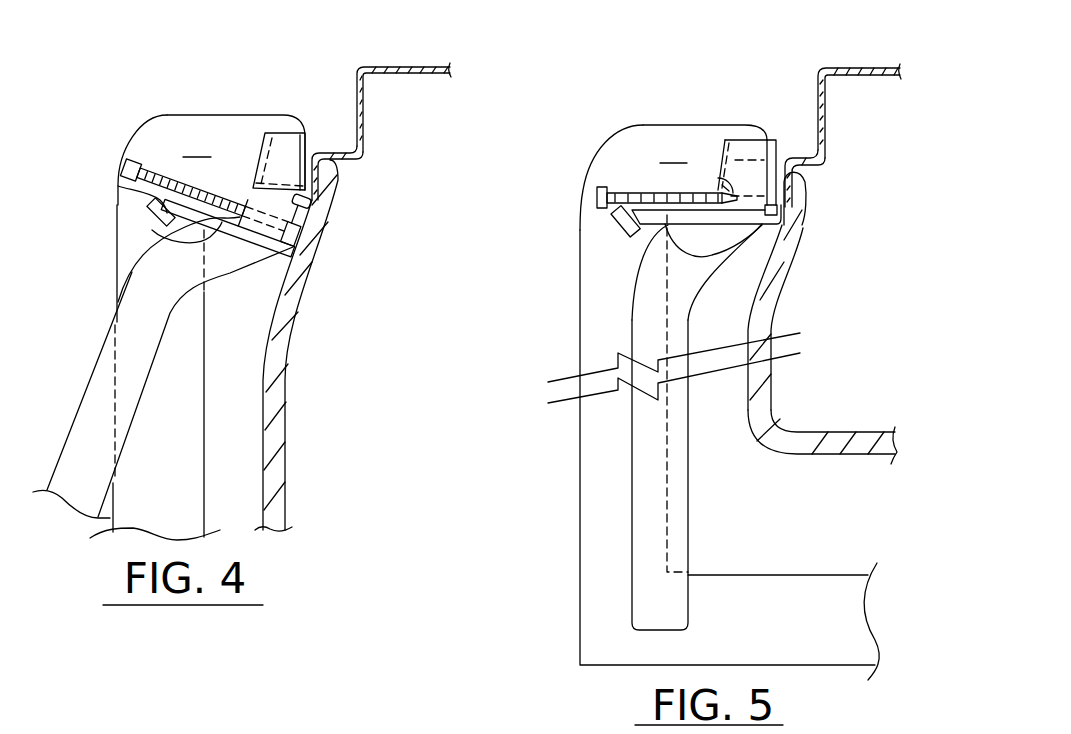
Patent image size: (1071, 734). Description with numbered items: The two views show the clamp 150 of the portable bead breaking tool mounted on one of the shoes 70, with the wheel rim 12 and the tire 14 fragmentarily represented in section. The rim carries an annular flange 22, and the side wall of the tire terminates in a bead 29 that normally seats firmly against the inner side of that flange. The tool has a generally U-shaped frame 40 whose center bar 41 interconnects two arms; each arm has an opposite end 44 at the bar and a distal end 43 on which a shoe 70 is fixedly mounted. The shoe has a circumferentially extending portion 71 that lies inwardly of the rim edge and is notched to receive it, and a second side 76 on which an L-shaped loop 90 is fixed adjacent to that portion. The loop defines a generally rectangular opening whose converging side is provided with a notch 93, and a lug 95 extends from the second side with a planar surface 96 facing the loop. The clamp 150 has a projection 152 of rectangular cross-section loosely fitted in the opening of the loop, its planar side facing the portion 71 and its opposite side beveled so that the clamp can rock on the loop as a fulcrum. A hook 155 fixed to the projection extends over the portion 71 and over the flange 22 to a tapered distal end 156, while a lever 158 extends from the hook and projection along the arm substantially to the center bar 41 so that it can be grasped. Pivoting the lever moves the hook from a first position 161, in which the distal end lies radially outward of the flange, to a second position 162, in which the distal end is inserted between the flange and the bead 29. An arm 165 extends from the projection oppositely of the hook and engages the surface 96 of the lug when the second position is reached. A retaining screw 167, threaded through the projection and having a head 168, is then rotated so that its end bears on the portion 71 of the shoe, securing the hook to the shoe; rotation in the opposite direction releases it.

In FIG. 4, the wheel rim 12 is at (386, 60).
In FIG. 5, the wheel rim 12 is at (861, 66).
In FIG. 4, the tire 14 is at (295, 496).
In FIG. 5, the tire 14 is at (787, 465).
In FIG. 4, the annular flange 22 is at (358, 143).
In FIG. 5, the annular flange 22 is at (786, 181).
In FIG. 5, the bead 29 is at (805, 185).
In FIG. 5, the frame 40 is at (560, 659).
In FIG. 5, the center bar 41 is at (843, 585).
In FIG. 5, the distal end 43 is at (592, 454).
In FIG. 5, the opposite end 44 is at (587, 562).
In FIG. 4, the shoe 70 is at (127, 141).
In FIG. 5, the shoe 70 is at (598, 137).
In FIG. 4, the circumferentially extending portion 71 is at (307, 143).
In FIG. 5, the circumferentially extending portion 71 is at (775, 163).
In FIG. 4, the second side 76 is at (197, 145).
In FIG. 5, the second side 76 is at (673, 152).
In FIG. 4, the L-shaped loop 90 is at (267, 133).
In FIG. 5, the L-shaped loop 90 is at (719, 185).
In FIG. 5, the notch 93 is at (715, 187).
In FIG. 4, the lug 95 is at (145, 208).
In FIG. 5, the lug 95 is at (620, 228).
In FIG. 4, the planar surface 96 is at (140, 190).
In FIG. 5, the planar surface 96 is at (620, 213).
In FIG. 4, the clamp 150 is at (229, 284).
In FIG. 5, the clamp 150 is at (712, 305).
In FIG. 4, the projection 152 is at (290, 212).
In FIG. 5, the projection 152 is at (729, 123).
In FIG. 4, the hook 155 is at (288, 252).
In FIG. 5, the hook 155 is at (782, 222).
In FIG. 4, the distal end 156 is at (300, 237).
In FIG. 4, the lever 158 is at (97, 383).
In FIG. 5, the lever 158 is at (673, 500).
In FIG. 4, the first position 161 is at (145, 270).
In FIG. 5, the second position 162 is at (640, 318).
In FIG. 4, the arm 165 is at (158, 238).
In FIG. 5, the arm 165 is at (775, 271).
In FIG. 5, the retaining screw 167 is at (665, 192).
In FIG. 5, the head 168 is at (593, 193).